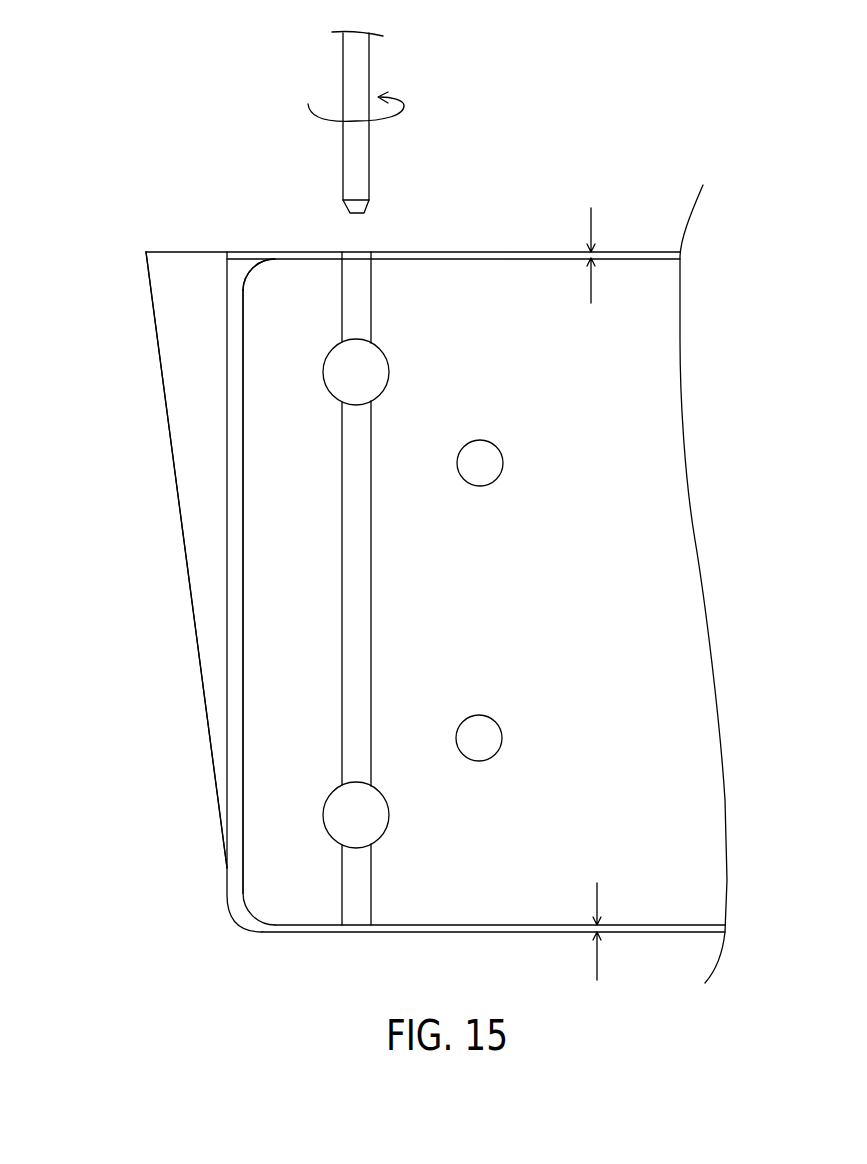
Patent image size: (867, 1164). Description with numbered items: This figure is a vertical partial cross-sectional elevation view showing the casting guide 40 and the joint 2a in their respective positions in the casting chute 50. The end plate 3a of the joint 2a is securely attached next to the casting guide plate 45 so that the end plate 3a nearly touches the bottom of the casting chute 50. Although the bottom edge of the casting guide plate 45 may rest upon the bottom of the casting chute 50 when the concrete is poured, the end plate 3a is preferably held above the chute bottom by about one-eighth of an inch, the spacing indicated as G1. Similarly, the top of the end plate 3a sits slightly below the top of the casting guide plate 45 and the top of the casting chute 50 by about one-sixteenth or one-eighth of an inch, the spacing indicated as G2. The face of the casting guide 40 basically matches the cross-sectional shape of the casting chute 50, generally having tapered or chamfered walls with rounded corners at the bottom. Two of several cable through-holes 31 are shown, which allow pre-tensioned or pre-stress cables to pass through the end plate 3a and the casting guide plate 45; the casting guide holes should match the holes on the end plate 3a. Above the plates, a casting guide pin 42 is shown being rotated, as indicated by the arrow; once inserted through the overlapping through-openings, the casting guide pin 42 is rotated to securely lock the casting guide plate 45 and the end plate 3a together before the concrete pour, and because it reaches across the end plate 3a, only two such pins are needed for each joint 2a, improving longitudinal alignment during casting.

The casting guide pin 42 is at (370, 67).
The casting guide plate 45 is at (240, 265).
The casting guide 40 is at (225, 445).
The casting chute 50 is at (187, 595).
The joint 2a is at (243, 709).
The cable through-holes 31 is at (500, 448).
The end plate 3a is at (636, 803).
The gap between end plate and chute bottom G1 is at (608, 912).
The gap between end plate top and guide plate top G2 is at (593, 238).